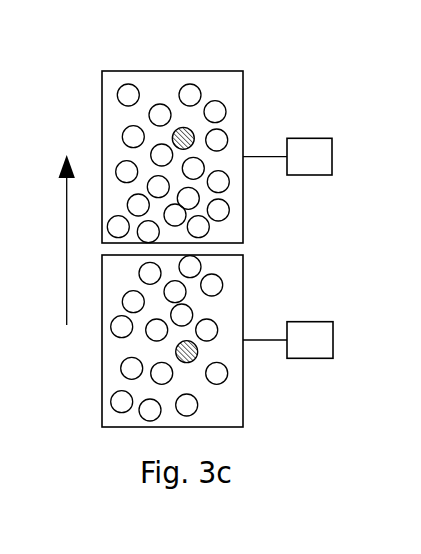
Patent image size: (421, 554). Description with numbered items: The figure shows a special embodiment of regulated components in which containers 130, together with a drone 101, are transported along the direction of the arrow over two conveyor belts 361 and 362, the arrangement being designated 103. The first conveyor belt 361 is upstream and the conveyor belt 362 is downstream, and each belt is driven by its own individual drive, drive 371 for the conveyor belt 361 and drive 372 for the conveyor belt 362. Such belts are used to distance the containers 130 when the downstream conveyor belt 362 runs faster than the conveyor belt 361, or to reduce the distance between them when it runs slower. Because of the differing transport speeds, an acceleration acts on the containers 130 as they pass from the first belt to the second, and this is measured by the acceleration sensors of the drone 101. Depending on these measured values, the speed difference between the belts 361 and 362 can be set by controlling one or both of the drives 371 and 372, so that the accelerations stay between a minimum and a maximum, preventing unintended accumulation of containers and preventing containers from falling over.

The sorting device 103 is at (187, 231).
The conveyor belt 362 is at (102, 86).
The conveyor belt 361 is at (168, 341).
The drive 372 is at (320, 152).
The drive 371 is at (320, 335).
The drone 101 is at (198, 350).
The container 130 is at (222, 377).